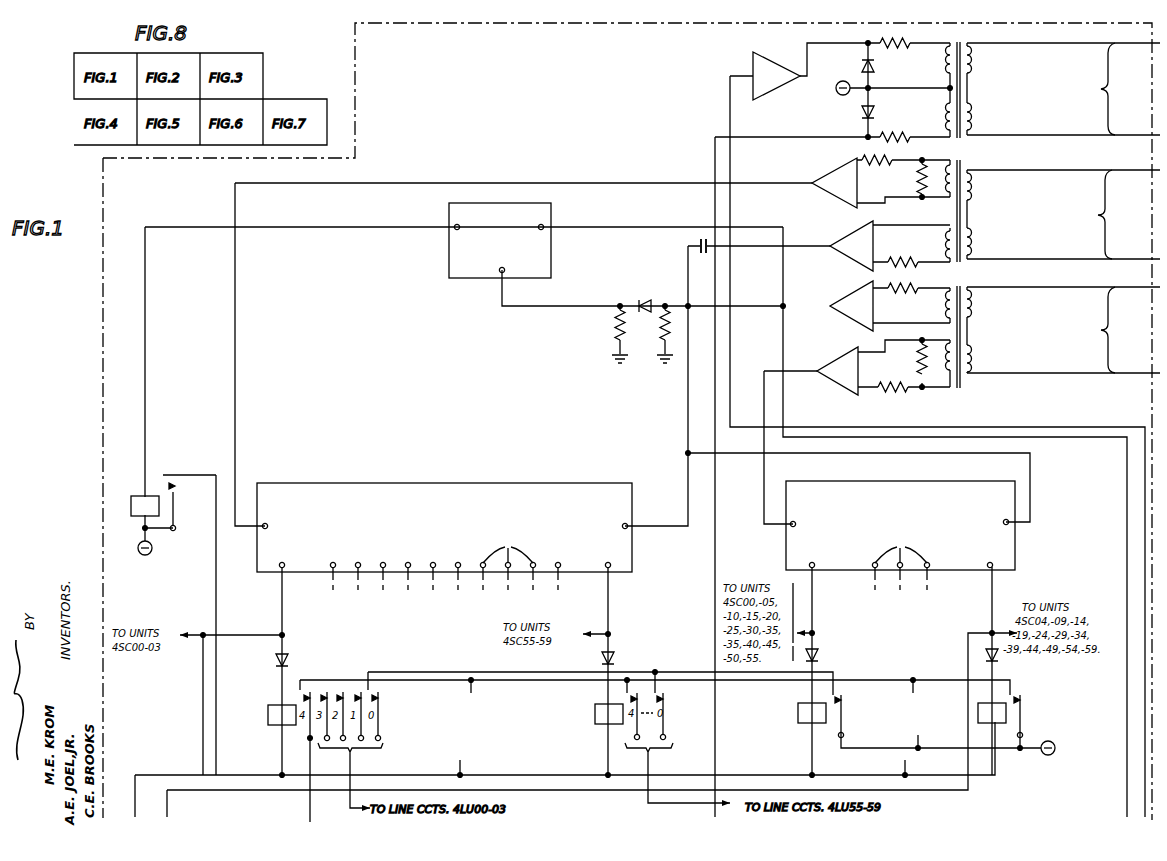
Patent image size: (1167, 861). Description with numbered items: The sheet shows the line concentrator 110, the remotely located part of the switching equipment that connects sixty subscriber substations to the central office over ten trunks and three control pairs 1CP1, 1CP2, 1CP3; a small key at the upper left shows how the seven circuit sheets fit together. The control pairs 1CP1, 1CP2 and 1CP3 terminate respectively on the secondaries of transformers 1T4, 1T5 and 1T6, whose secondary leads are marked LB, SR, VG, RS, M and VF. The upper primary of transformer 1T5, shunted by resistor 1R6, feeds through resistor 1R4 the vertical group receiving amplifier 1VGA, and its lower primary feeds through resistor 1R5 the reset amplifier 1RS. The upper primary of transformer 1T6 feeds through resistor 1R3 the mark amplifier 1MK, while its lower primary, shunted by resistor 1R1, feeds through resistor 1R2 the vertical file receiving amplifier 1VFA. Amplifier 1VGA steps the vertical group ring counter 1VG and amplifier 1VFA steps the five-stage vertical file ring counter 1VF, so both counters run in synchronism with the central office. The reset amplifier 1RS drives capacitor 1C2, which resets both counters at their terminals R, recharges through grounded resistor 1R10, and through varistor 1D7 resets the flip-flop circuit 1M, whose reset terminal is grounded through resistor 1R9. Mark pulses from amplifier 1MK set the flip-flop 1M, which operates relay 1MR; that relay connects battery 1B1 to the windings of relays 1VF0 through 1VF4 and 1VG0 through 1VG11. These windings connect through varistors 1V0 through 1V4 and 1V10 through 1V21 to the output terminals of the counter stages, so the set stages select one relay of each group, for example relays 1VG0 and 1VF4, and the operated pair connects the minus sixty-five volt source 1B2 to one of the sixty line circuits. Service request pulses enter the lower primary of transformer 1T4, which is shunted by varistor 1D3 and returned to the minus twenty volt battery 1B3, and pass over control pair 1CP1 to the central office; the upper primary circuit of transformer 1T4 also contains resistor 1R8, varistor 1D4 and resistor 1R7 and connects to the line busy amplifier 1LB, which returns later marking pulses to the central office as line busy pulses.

The line concentrator 110 is at (627, 421).
The flip-flop circuit 1M is at (500, 240).
The vertical group ring counter 1VG is at (510, 480).
The vertical file ring counter 1VF is at (980, 480).
The line busy amplifier 1LB is at (753, 60).
The vertical group receiving amplifier 1VGA is at (842, 172).
The reset amplifier 1RS is at (840, 236).
The amplifier 1MK is at (846, 316).
The vertical file receiving amplifier 1VFA is at (846, 390).
The resistor 1R8 is at (881, 43).
The diode 1D4 is at (874, 60).
The varistor 1D3 is at (874, 110).
The battery 1B3 is at (843, 95).
The resistor 1R7 is at (903, 137).
The resistor 1R4 is at (892, 160).
The resistor 1R6 is at (916, 181).
The resistor 1R5 is at (898, 260).
The resistor 1R3 is at (900, 294).
The resistor 1R1 is at (915, 365).
The resistor 1R2 is at (891, 393).
The transformer 1T4 is at (956, 81).
The transformer 1T5 is at (960, 205).
The transformer 1T6 is at (959, 328).
The lead LB is at (1022, 42).
The lead SR is at (1019, 136).
The lead VG is at (1020, 172).
The lead RS is at (1018, 260).
The lead M is at (1018, 287).
The lead VF is at (1015, 373).
The control pair 1CP1 is at (1082, 89).
The control pair 1CP2 is at (1081, 214).
The control pair 1CP3 is at (1082, 330).
The capacitor 1C2 is at (696, 247).
The varistor 1D7 is at (647, 298).
The resistor 1R9 is at (616, 332).
The grounded resistor 1R10 is at (661, 351).
The relay 1MR is at (135, 495).
The battery 1B1 is at (145, 557).
The varistor 1V10 is at (292, 660).
The relay 1VG0 is at (268, 724).
The varistor 1V21 is at (614, 660).
The relay 1VG11 is at (595, 716).
The varistor 1V0 is at (820, 660).
The relay 1VF0 is at (798, 718).
The varistor 1V4 is at (984, 656).
The relay 1VF4 is at (978, 716).
The battery 1B2 is at (1052, 755).